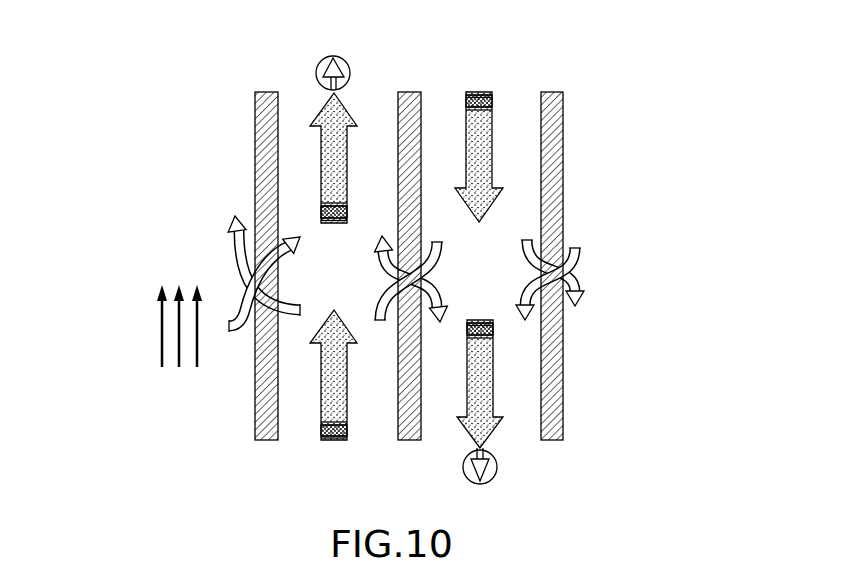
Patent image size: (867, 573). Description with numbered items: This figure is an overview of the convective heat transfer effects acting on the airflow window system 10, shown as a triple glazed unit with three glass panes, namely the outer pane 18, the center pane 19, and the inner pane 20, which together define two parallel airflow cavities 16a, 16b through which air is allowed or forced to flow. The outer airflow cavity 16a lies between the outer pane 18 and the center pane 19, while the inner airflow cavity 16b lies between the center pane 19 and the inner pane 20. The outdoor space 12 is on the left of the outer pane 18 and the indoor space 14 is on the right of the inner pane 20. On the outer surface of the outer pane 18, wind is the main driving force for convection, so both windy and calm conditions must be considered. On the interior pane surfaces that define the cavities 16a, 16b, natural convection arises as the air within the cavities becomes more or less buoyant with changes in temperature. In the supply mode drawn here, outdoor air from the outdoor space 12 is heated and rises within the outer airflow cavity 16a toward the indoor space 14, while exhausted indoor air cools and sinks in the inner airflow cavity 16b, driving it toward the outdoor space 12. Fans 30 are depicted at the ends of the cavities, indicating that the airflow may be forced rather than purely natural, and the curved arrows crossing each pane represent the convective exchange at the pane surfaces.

The airflow window system 10 is at (222, 147).
The outdoor space 12 is at (152, 287).
The indoor space 14 is at (687, 198).
The outer airflow cavity 16a is at (303, 423).
The inner airflow cavity 16b is at (439, 422).
The outer pane 18 is at (267, 92).
The center pane 19 is at (413, 92).
The inner pane 20 is at (553, 91).
The fan 30 is at (342, 56).